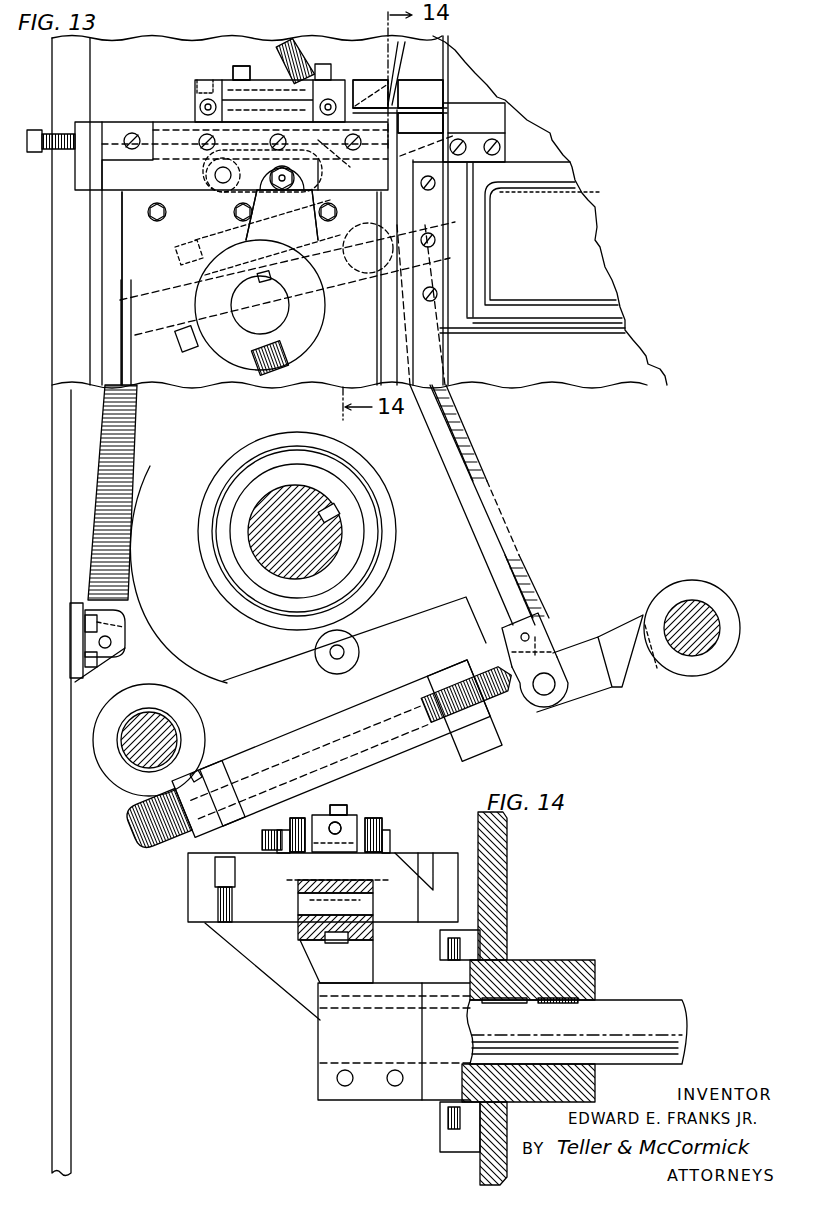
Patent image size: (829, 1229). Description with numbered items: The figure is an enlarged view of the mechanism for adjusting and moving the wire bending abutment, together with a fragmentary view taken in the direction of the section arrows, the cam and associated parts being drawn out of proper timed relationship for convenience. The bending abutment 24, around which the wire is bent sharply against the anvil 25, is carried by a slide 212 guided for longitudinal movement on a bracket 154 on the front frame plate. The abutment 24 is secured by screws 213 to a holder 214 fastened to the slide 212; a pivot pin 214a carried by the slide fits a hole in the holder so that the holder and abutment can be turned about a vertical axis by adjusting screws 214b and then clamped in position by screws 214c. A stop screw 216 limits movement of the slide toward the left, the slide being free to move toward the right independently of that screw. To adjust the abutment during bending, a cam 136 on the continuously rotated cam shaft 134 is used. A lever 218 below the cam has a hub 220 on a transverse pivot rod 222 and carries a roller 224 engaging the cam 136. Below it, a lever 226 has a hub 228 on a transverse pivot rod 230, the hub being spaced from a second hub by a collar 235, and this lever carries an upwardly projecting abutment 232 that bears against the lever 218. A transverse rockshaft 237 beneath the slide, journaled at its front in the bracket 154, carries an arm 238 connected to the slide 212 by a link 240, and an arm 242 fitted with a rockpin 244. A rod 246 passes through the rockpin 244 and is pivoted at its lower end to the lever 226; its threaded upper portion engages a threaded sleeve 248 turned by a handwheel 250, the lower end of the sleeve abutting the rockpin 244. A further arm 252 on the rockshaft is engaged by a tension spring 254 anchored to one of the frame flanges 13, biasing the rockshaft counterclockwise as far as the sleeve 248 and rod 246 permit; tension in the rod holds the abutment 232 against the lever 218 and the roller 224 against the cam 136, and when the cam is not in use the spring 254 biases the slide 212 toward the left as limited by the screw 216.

In FIG. 13, the transverse flange 13 is at (52, 813).
In FIG. 13, the bending abutment 24 is at (372, 100).
In FIG. 14, the bending abutment 24 is at (342, 838).
In FIG. 13, the anvil 25 is at (410, 95).
In FIG. 13, the cam shaft 134 is at (248, 534).
In FIG. 13, the cam 136 is at (140, 492).
In FIG. 13, the bracket 154 is at (100, 235).
In FIG. 14, the bracket 154 is at (188, 894).
In FIG. 13, the slide 212 is at (195, 98).
In FIG. 14, the slide 212 is at (395, 860).
In FIG. 13, the screw 213 is at (236, 67).
In FIG. 14, the screw 213 is at (338, 818).
In FIG. 13, the holder 214 is at (324, 90).
In FIG. 14, the holder 214 is at (421, 827).
In FIG. 13, the pivot pin 214a is at (280, 72).
In FIG. 13, the adjusting screw 214b is at (208, 133).
In FIG. 14, the adjusting screw 214b is at (262, 852).
In FIG. 13, the clamping screw 214c is at (232, 80).
In FIG. 14, the clamping screw 214c is at (262, 840).
In FIG. 13, the stop screw 216 is at (60, 130).
In FIG. 13, the lever 218 is at (430, 612).
In FIG. 13, the hub 220 is at (125, 700).
In FIG. 13, the pivot rod 222 is at (143, 762).
In FIG. 13, the roller 224 is at (350, 636).
In FIG. 13, the lever 226 is at (396, 765).
In FIG. 13, the hub 228 is at (680, 583).
In FIG. 13, the pivot rod 230 is at (692, 674).
In FIG. 13, the abutment 232 is at (430, 700).
In FIG. 13, the collar 235 is at (306, 768).
In FIG. 13, the rockshaft 237 is at (272, 320).
In FIG. 14, the rockshaft 237 is at (628, 1000).
In FIG. 13, the arm 238 is at (232, 234).
In FIG. 14, the arm 238 is at (320, 1020).
In FIG. 13, the link 240 is at (282, 215).
In FIG. 14, the link 240 is at (330, 940).
In FIG. 13, the arm 242 is at (330, 340).
In FIG. 13, the rockpin 244 is at (440, 216).
In FIG. 13, the rod 246 is at (430, 336).
In FIG. 13, the threaded sleeve 248 is at (474, 132).
In FIG. 13, the handwheel 250 is at (390, 45).
In FIG. 13, the arm 252 is at (287, 287).
In FIG. 13, the tension spring 254 is at (135, 410).